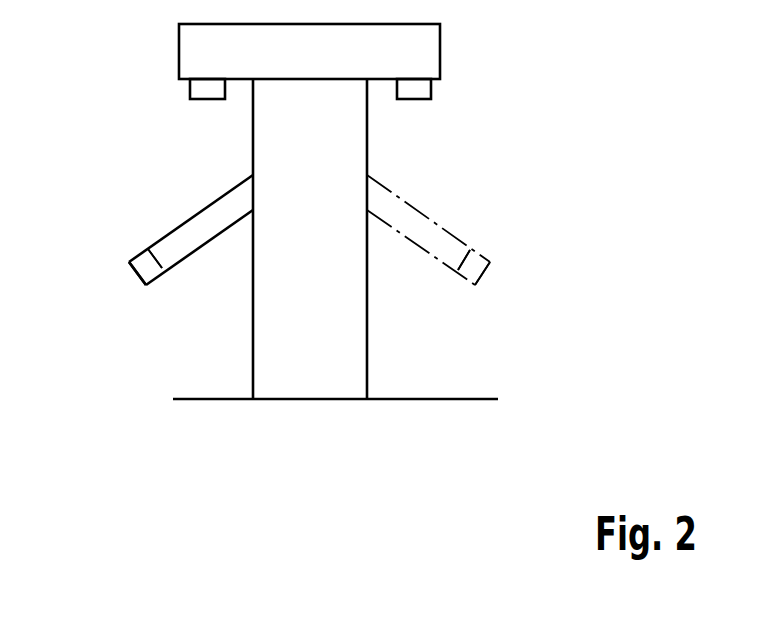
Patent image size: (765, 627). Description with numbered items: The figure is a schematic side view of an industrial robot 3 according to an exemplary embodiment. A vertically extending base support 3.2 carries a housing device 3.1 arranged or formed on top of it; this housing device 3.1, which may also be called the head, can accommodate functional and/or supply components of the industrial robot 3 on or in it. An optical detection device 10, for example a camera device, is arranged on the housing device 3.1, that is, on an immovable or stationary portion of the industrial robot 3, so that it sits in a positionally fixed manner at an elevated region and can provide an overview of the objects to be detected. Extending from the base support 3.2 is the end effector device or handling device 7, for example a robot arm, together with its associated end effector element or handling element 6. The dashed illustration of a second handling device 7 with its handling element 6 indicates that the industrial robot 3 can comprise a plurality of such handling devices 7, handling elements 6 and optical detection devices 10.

The industrial robot 3 is at (450, 337).
The housing device 3.1 is at (440, 53).
The base support 3.2 is at (367, 138).
The optical detection device 10 is at (190, 93).
The handling device 7 is at (147, 220).
The handling element 6 is at (110, 288).